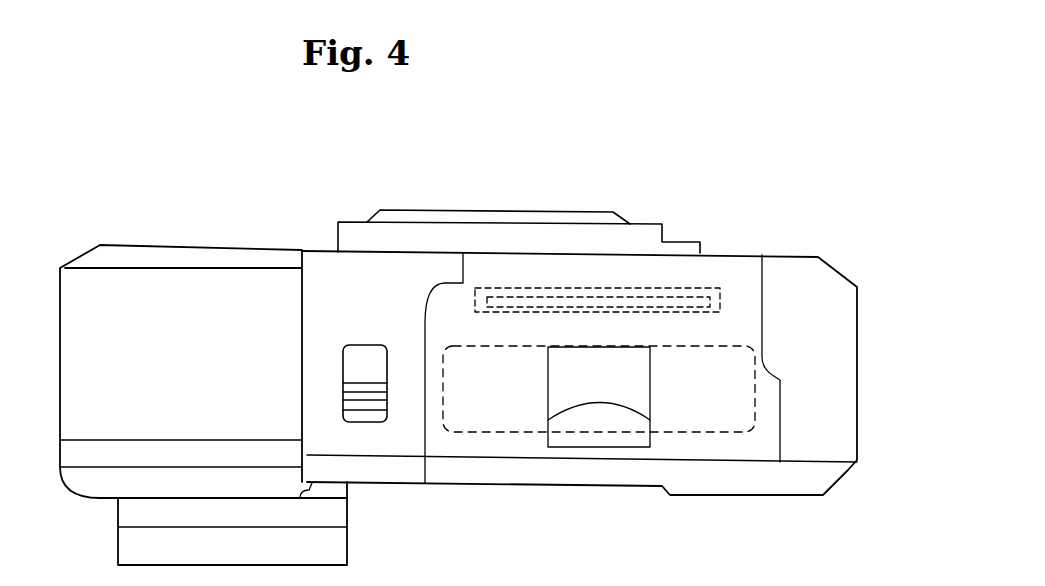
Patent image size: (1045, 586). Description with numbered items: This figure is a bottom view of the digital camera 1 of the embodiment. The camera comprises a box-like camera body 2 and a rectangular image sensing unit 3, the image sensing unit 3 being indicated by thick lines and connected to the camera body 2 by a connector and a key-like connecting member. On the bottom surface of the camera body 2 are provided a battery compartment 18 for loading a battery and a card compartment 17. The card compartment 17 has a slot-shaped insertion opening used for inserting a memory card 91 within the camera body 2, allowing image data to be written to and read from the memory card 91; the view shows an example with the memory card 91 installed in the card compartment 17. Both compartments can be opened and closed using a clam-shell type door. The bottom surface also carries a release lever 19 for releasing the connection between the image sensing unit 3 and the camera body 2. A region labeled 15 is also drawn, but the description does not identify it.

The digital camera 1 is at (267, 145).
The camera body 2 is at (526, 192).
The image sensing unit 3 is at (152, 238).
The right grip portion 15 is at (766, 412).
The card compartment 17 is at (512, 283).
The battery compartment 18 is at (688, 418).
The release lever 19 is at (388, 372).
The memory card 91 is at (607, 283).